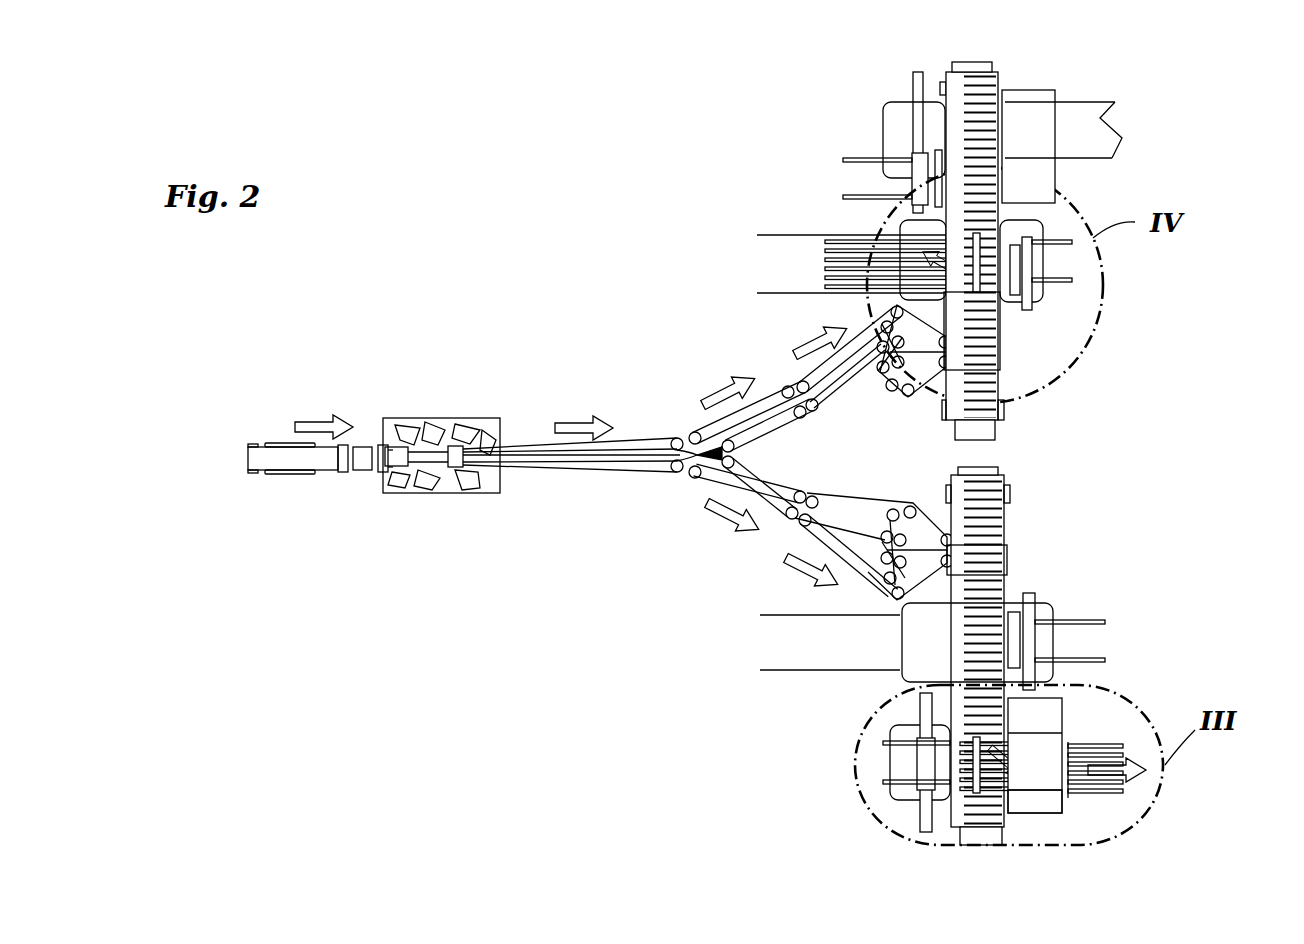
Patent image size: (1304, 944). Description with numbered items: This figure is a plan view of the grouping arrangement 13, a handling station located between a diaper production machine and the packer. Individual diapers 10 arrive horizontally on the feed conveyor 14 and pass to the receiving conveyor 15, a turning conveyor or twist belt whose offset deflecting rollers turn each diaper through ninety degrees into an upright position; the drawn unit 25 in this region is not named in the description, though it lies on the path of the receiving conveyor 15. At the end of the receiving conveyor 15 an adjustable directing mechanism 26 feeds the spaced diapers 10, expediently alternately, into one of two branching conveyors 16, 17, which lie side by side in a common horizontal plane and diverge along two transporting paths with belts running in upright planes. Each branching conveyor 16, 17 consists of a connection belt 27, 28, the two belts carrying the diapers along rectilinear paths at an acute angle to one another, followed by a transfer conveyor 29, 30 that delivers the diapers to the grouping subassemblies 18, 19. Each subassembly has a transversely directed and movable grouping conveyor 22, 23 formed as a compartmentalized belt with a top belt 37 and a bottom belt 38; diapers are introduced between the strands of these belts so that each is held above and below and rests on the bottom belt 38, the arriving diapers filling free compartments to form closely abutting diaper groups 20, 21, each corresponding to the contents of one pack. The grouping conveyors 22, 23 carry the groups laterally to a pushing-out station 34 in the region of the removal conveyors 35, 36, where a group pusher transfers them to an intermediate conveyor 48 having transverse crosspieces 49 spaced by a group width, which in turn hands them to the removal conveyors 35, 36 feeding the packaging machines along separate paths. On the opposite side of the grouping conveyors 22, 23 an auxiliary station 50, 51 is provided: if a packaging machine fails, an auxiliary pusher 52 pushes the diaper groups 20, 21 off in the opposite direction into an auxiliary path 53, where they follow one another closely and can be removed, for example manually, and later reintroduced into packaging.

The diaper 10 is at (283, 445).
The grouping arrangement 13 is at (618, 303).
The feed conveyor 14 is at (298, 362).
The receiving conveyor 15 is at (540, 368).
The branching conveyor 16 is at (768, 355).
The branching conveyor 17 is at (765, 548).
The grouping subassembly 18 is at (1100, 195).
The grouping subassembly 19 is at (1060, 573).
The diaper group 20 is at (1013, 357).
The diaper group 21 is at (1113, 728).
The grouping conveyor 22 is at (1008, 68).
The grouping conveyor 23 is at (1025, 500).
The separating unit 25 is at (430, 495).
The directing mechanism 26 is at (700, 484).
The connection belt 27 is at (690, 418).
The connection belt 28 is at (690, 507).
The transfer conveyor 29 is at (808, 320).
The transfer conveyor 30 is at (862, 597).
The pushing-out station 34 is at (1130, 140).
The removal conveyor 35 is at (1082, 83).
The removal conveyor 36 is at (1110, 805).
The top belt 37 is at (1010, 557).
The bottom belt 38 is at (1071, 511).
The intermediate conveyor 48 is at (1040, 818).
The transverse crosspiece 49 is at (1047, 733).
The auxiliary station 50 is at (1013, 330).
The auxiliary station 51 is at (1125, 610).
The auxiliary pusher 52 is at (1087, 283).
The auxiliary path 53 is at (757, 235).